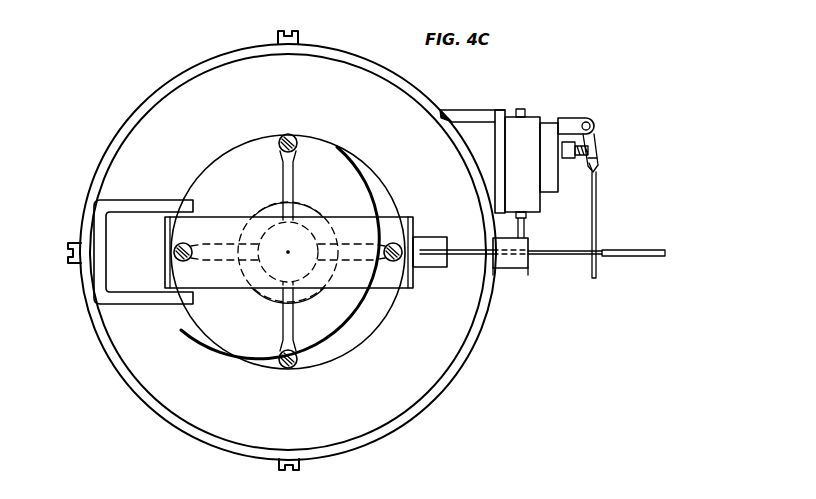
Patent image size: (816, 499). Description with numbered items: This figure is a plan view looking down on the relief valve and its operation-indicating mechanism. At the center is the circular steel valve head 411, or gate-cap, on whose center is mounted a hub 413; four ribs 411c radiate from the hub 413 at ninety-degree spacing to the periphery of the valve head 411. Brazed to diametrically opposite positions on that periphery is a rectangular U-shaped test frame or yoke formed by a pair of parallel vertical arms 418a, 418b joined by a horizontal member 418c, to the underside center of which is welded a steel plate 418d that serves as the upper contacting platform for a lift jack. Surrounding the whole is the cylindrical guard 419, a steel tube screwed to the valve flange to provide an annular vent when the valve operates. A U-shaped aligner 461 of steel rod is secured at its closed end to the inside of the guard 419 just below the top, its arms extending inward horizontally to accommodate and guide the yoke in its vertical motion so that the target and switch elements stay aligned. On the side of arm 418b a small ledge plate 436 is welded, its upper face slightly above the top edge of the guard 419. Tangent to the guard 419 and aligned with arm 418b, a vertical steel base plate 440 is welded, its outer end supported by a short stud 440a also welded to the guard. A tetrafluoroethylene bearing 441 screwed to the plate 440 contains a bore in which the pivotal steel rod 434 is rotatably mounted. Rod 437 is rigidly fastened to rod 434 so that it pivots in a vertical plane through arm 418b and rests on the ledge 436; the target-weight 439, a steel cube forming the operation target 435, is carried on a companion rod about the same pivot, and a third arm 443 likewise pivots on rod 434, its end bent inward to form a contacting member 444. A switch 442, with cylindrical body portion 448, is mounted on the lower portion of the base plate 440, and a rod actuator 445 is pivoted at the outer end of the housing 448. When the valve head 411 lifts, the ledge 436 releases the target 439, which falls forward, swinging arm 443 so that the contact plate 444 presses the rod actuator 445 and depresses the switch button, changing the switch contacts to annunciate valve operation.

The cylindrical guard 419 is at (183, 76).
The U-shaped aligner 461 is at (136, 208).
The valve head 411 is at (383, 190).
The ribs 411c is at (283, 185).
The hub 413 is at (345, 218).
The vertical arm 418a is at (165, 258).
The vertical arm 418b is at (418, 222).
The horizontal member 418c is at (360, 280).
The steel plate 418d is at (276, 290).
The ledge plate 436 is at (436, 266).
The steel rod 437 is at (465, 256).
The target-weight 439 is at (520, 268).
The operation target 435 is at (506, 278).
The pivotal steel rod 434 is at (525, 229).
The third arm 443 is at (580, 256).
The contacting member 444 is at (641, 251).
The rod actuator 445 is at (596, 209).
The short stud 440a is at (455, 87).
The steel base plate 440 is at (487, 112).
The bearing 441 is at (539, 120).
The cylindrical body portion 448 is at (552, 122).
The switch 442 is at (690, 115).